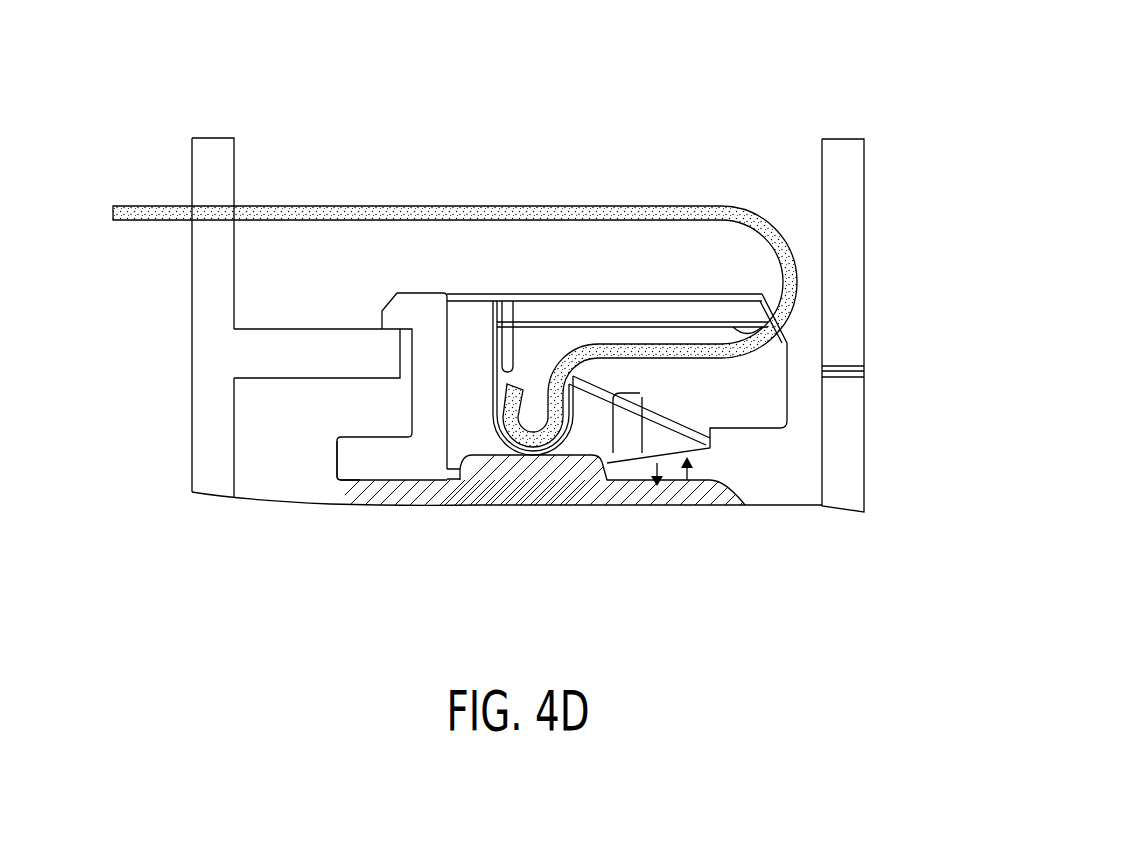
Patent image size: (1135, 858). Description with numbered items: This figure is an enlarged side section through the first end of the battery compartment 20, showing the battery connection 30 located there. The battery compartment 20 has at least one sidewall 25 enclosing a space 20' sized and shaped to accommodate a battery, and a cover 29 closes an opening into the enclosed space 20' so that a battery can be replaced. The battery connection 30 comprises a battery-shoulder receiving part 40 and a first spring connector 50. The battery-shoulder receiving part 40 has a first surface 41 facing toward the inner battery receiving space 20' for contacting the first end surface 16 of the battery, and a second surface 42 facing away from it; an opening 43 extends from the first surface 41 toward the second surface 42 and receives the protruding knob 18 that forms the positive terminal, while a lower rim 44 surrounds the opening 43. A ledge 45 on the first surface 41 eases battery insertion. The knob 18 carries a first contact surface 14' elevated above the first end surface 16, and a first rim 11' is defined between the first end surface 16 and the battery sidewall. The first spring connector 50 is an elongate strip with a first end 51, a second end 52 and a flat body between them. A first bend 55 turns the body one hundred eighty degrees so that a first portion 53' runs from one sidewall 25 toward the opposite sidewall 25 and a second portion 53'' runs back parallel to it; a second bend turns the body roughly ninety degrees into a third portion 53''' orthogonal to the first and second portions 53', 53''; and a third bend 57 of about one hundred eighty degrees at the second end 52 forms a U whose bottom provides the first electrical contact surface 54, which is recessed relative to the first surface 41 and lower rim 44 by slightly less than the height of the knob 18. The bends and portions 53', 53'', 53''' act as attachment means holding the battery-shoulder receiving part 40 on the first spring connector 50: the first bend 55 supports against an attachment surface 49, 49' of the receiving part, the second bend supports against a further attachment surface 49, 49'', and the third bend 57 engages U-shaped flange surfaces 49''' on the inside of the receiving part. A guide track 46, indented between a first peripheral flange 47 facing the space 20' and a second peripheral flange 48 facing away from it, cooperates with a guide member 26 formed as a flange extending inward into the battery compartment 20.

The battery connection 30 is at (800, 96).
The battery compartment 20 is at (67, 331).
The enclosed space 20' is at (856, 509).
The sidewall 25 is at (217, 153).
The guide member 26 is at (297, 348).
The cover 29 is at (850, 455).
The battery-shoulder receiving part 40 is at (770, 418).
The first surface 41 is at (345, 484).
The second surface 42 is at (458, 323).
The opening 43 is at (468, 471).
The lower rim 44 is at (448, 478).
The ledge 45 is at (689, 483).
The guide track 46 is at (382, 395).
The first peripheral flange 47 is at (330, 482).
The second peripheral flange 48 is at (395, 323).
The contact portion 49, 49' is at (837, 325).
The contact portion 49, 49'' is at (606, 273).
The U-shaped surfaces 49''' is at (476, 253).
The first spring connector 50 is at (292, 228).
The first end 51 is at (117, 204).
The second end 52 is at (523, 382).
The first portion 53' is at (301, 167).
The second portion 53'' is at (639, 465).
The third portion 53''' is at (632, 254).
The first electrical contact surface 54 is at (527, 468).
The first bend 55 is at (787, 238).
The third bend 57 is at (583, 385).
The first contact surface 14' is at (432, 216).
The first end surface 16 is at (657, 460).
The protruding knob 18 is at (566, 486).
The first rim 11' is at (763, 523).